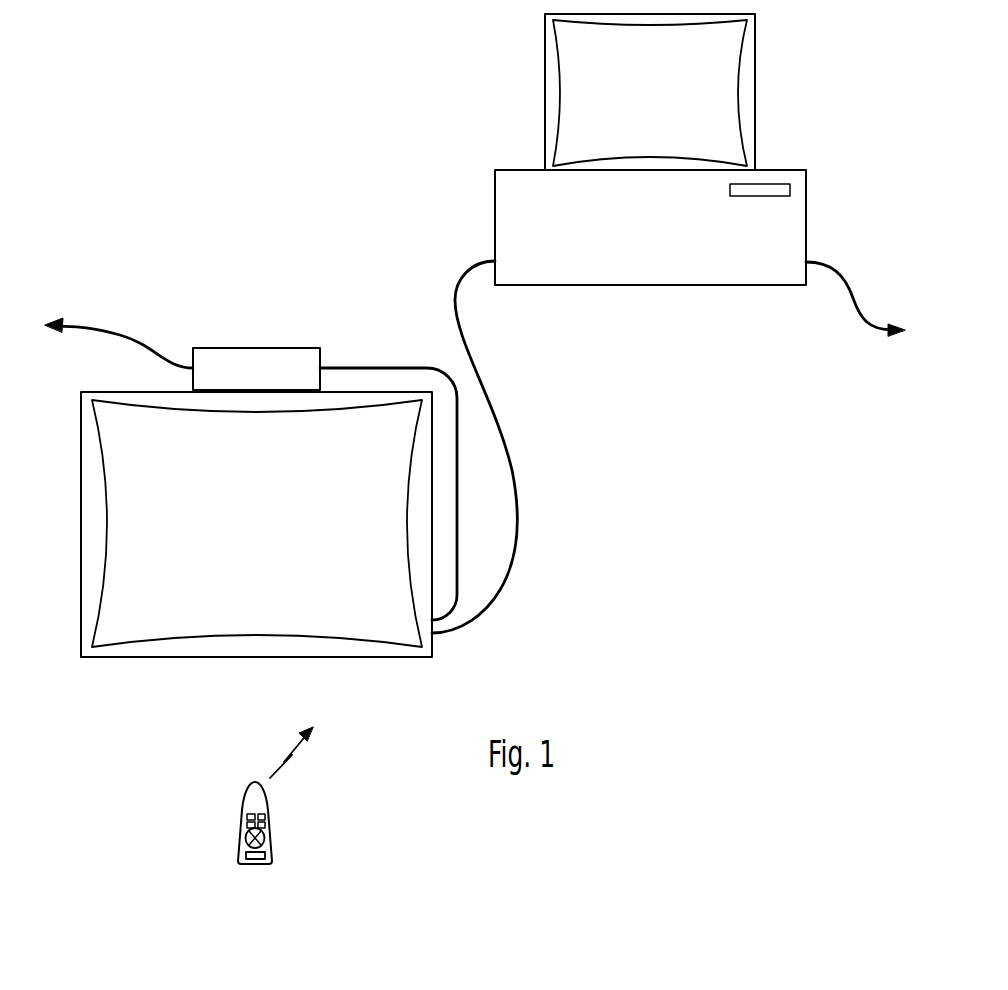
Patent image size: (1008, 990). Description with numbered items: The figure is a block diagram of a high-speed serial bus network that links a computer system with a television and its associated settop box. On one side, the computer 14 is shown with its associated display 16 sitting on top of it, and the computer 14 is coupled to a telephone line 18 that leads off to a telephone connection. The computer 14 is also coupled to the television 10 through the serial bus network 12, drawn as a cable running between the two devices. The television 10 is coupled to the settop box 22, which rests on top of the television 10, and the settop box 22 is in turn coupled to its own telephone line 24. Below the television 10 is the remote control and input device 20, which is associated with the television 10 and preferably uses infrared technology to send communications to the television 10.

The television 10 is at (167, 657).
The IEEE 1394 serial bus network 12 is at (508, 470).
The computer 14 is at (495, 215).
The display 16 is at (545, 83).
The telephone line 18 is at (838, 265).
The remote control and input device 20 is at (272, 832).
The settop box 22 is at (265, 348).
The telephone line 24 is at (138, 350).